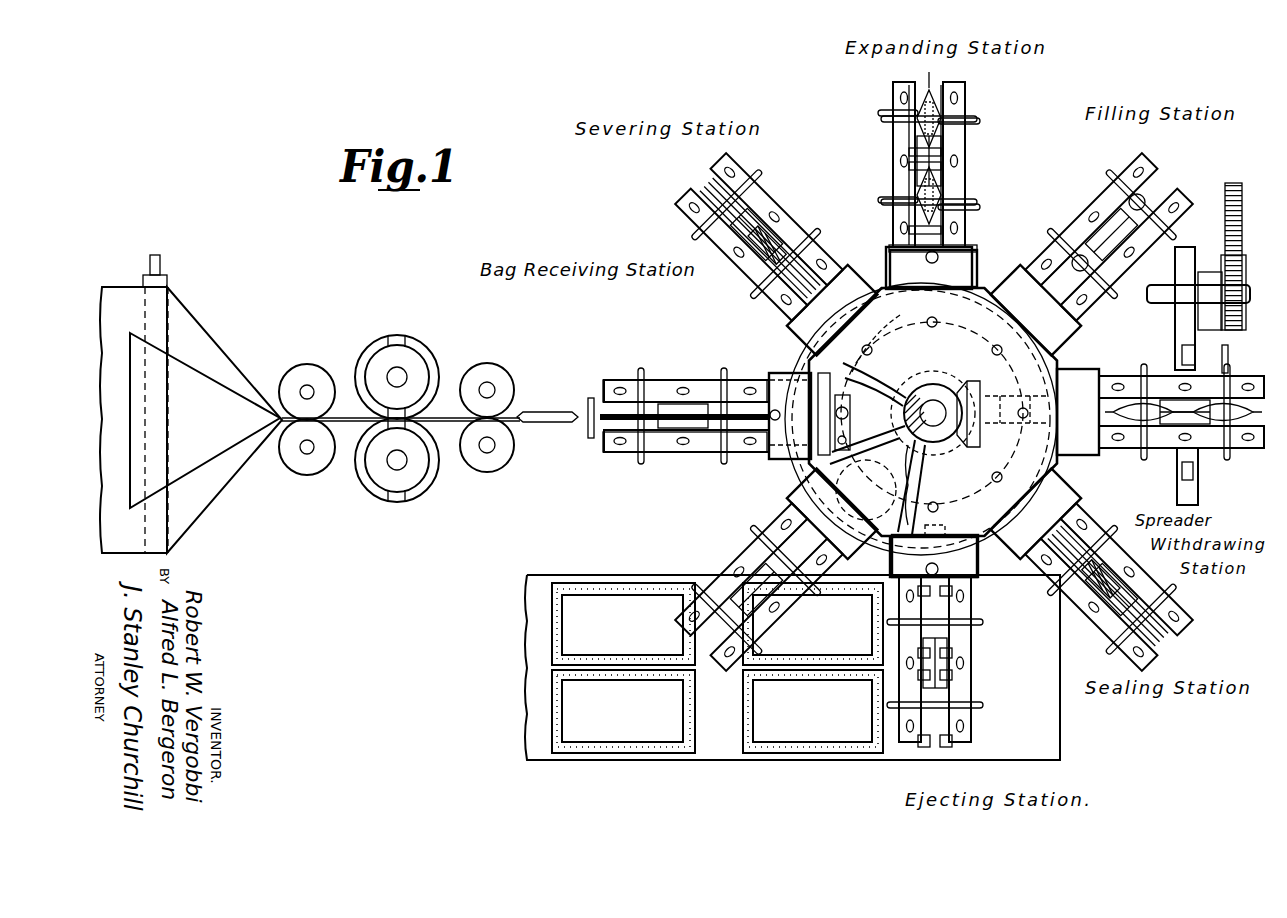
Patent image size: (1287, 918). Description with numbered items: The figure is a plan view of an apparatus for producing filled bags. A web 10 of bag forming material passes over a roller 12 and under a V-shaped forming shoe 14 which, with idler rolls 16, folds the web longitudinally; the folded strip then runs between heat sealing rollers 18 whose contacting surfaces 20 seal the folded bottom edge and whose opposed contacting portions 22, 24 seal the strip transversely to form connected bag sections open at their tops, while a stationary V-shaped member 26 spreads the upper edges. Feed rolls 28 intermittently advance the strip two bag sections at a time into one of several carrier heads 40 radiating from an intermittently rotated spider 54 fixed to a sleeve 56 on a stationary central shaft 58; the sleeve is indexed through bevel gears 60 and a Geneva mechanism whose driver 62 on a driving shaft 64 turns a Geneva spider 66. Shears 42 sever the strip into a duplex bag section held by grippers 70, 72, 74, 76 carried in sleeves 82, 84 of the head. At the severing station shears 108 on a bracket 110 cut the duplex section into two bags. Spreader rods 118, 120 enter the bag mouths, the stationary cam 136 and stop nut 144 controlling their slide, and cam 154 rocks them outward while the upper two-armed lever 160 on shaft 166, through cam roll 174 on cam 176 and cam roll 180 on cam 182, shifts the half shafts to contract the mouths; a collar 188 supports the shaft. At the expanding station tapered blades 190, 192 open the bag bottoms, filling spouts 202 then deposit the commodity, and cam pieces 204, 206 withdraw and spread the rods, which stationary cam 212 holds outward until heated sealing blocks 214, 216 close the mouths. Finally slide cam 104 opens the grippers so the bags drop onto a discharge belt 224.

The web 10 is at (140, 286).
The roller 12 is at (168, 281).
The V-shaped forming member or shoe 14 is at (205, 358).
The idler rolls 16 is at (308, 366).
The heat sealing rollers 18 is at (385, 346).
The contacting surfaces 20 is at (427, 352).
The opposed contacting portions 22 is at (397, 336).
The opposed contacting portions 24 is at (420, 421).
The stationary V-shaped member 26 is at (560, 411).
The feed rolls 28 is at (495, 368).
The carrier head 40 is at (617, 346).
The shears 42 is at (590, 397).
The spider 54 is at (862, 455).
The sleeve 56 is at (968, 345).
The stationary central shaft 58 is at (965, 382).
The bevel gears 60 is at (957, 449).
The driver 62 is at (1244, 327).
The driving shaft 64 is at (1152, 304).
The Geneva spider 66 is at (1199, 499).
The grippers 70 is at (612, 378).
The grippers 72 is at (690, 383).
The grippers 74 is at (652, 383).
The grippers 76 is at (742, 383).
The sleeve 82 is at (674, 453).
The sleeve 84 is at (708, 379).
The slide cam piece 104 is at (945, 520).
The shears 108 is at (778, 218).
The bracket 110 is at (1230, 359).
The bag spreading rods 118 is at (694, 234).
The bag spreading rods 120 is at (752, 290).
The stationary cam 136 is at (788, 472).
The stop nut 144 is at (1042, 520).
The stationary cam piece 154 is at (1074, 340).
The upper two-armed lever 160 is at (934, 384).
The shaft 166 is at (896, 428).
The cam roll 174 is at (857, 350).
The stationary cam 176 is at (940, 322).
The cam roll 180 is at (786, 445).
The second stationary cam 182 is at (915, 322).
The collar 188 is at (1000, 455).
The tapered blade 190 is at (905, 122).
The tapered blade 192 is at (945, 116).
The filling spouts 202 is at (1082, 218).
The vertically reciprocable cam piece 204 is at (1086, 456).
The second vertically reciprocable cam piece 206 is at (1010, 400).
The stationary cam piece 212 is at (944, 575).
The heated sealing block 214 is at (1180, 606).
The heated sealing block 216 is at (1112, 625).
The discharge belt 224 is at (737, 762).